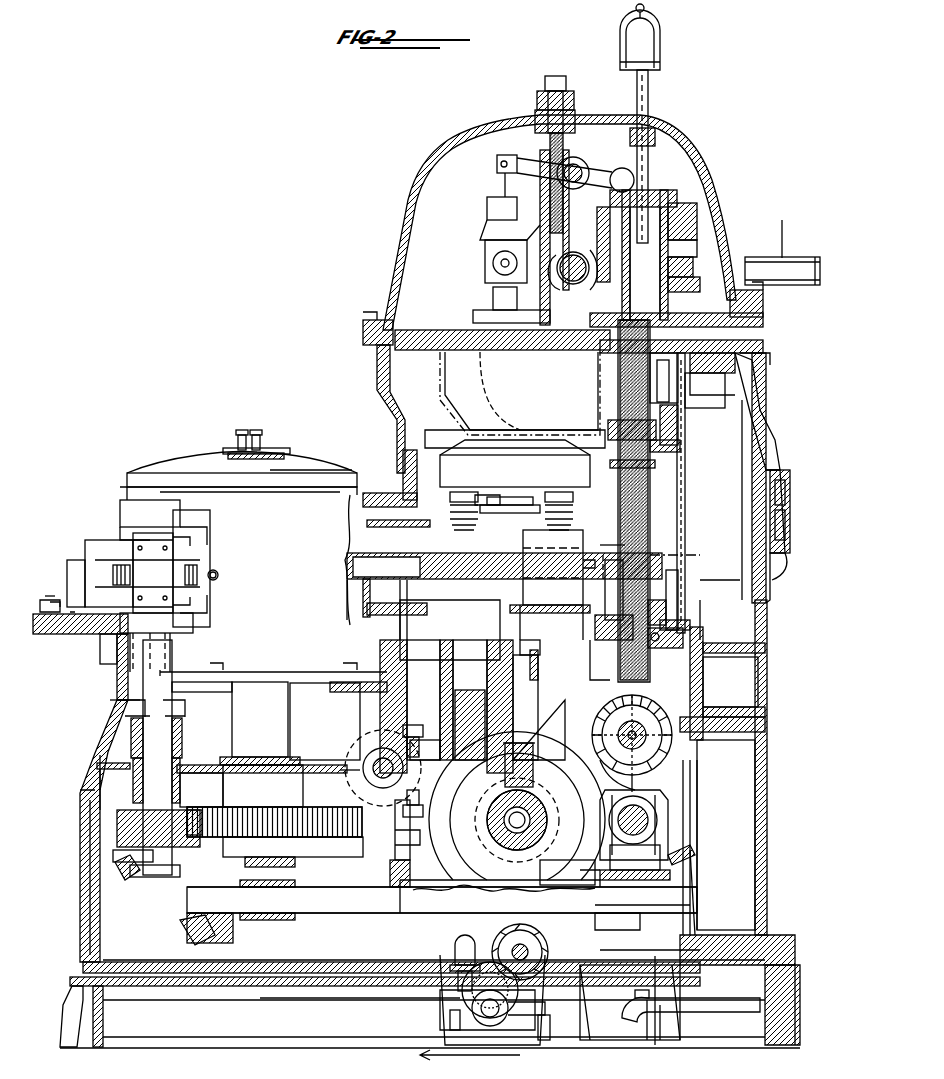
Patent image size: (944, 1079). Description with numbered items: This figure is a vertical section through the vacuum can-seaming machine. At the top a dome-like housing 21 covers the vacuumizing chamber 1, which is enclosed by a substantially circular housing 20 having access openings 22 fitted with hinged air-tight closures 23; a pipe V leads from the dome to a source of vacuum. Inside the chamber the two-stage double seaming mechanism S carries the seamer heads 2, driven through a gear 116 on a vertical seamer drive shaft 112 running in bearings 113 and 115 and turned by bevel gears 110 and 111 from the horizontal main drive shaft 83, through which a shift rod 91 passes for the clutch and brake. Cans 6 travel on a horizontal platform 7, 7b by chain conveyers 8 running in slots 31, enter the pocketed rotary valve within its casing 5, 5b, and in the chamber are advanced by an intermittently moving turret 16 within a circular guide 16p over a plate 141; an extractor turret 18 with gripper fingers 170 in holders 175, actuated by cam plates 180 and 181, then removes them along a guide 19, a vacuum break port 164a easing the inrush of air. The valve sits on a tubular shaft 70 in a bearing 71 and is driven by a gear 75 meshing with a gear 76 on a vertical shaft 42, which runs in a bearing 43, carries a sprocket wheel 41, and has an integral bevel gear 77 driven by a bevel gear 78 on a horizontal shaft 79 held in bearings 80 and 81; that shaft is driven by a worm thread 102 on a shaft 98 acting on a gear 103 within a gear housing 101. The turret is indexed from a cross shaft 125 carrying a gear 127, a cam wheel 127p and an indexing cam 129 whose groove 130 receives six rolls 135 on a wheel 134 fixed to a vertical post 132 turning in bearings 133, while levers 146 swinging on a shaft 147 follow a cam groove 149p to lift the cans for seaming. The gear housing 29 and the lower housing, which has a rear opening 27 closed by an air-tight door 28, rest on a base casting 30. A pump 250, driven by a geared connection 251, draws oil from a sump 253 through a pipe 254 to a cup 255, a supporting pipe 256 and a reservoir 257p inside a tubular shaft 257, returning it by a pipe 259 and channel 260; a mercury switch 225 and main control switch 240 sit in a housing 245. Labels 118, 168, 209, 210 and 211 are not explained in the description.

The vacuumizing chamber 1 is at (408, 392).
The seamer heads 2 is at (515, 428).
The valve casing 5 is at (283, 502).
The dimension 5b is at (782, 226).
The cans 6 is at (552, 571).
The horizontal platform 7 is at (663, 696).
The bolt 7b is at (55, 598).
The chain conveyers 8 is at (78, 627).
The intermittently moving turret 16 is at (376, 497).
The circular guide 16p is at (626, 542).
The extractor turret 18 is at (138, 568).
The guide 19 is at (70, 582).
The circular housing 20 is at (755, 398).
The dome-like housing 21 is at (708, 188).
The openings 22 is at (772, 480).
The air-tight closures 23 is at (770, 455).
The opening 27 is at (705, 890).
The air-tight door 28 is at (768, 808).
The supporting housing 29 is at (120, 718).
The base casting 30 is at (280, 984).
The parallel slots 31 is at (108, 636).
The sprocket wheel 41 is at (135, 722).
The vertical driven shaft 42 is at (163, 703).
The bearing 43 is at (120, 785).
The tubular supporting shaft 70 is at (245, 728).
The bearing 71 is at (220, 784).
The driving gear 75 is at (285, 822).
The gear 76 is at (120, 815).
The bevel gear 77 is at (120, 872).
The driving bevel gear 78 is at (190, 925).
The horizontal driven shaft 79 is at (320, 905).
The supporting bearing 80 is at (630, 1002).
The supporting bearing 81 is at (290, 867).
The main drive shaft 83 is at (650, 770).
The shift rod 91 is at (665, 740).
The supporting shaft 98 is at (658, 822).
The gear housing 101 is at (668, 808).
The worm thread 102 is at (662, 845).
The gear 103 is at (695, 856).
The bevel gear 110 is at (685, 706).
The bevel gear 111 is at (695, 690).
The seamer drive shaft 112 is at (652, 470).
The anti-friction bearing 113 is at (668, 612).
The bearing 115 is at (676, 434).
The gear 116 is at (715, 395).
The spring 118 is at (450, 528).
The horizontal cross shaft 125 is at (500, 830).
The gear 127 is at (490, 895).
The cam wheel 127p is at (392, 860).
The indexing cam 129 is at (415, 828).
The cam groove 130 is at (485, 842).
The vertical post 132 is at (512, 695).
The bearings 133 is at (438, 628).
The wheel 134 is at (525, 760).
The rolls 135 is at (538, 800).
The plate 141 is at (593, 610).
The levers 146 is at (380, 752).
The supporting shaft 147 is at (372, 778).
The cam groove 149p is at (640, 772).
The vacuum break port 164a is at (257, 583).
The bearing 168 is at (118, 565).
The gripper fingers 170 is at (170, 546).
The holders 175 is at (195, 550).
The cam plate 180 is at (142, 522).
The cam plate 181 is at (165, 630).
The plate 209 is at (275, 450).
The terminal 210 is at (250, 435).
The terminal 211 is at (236, 432).
The mercury switch 225 is at (786, 522).
The main control switch 240 is at (788, 488).
The switch housing 245 is at (782, 553).
The pump 250 is at (455, 1000).
The geared connection 251 is at (510, 948).
The sump 253 is at (675, 1015).
The pipe 254 is at (449, 963).
The cup 255 is at (660, 42).
The supporting pipe 256 is at (650, 160).
The tubular supporting shaft 257 is at (690, 212).
The reservoir 257p is at (690, 252).
The pipe 259 is at (687, 510).
The channel 260 is at (678, 640).
The double seaming mechanism S is at (505, 238).
The vacuum pipe V is at (792, 262).